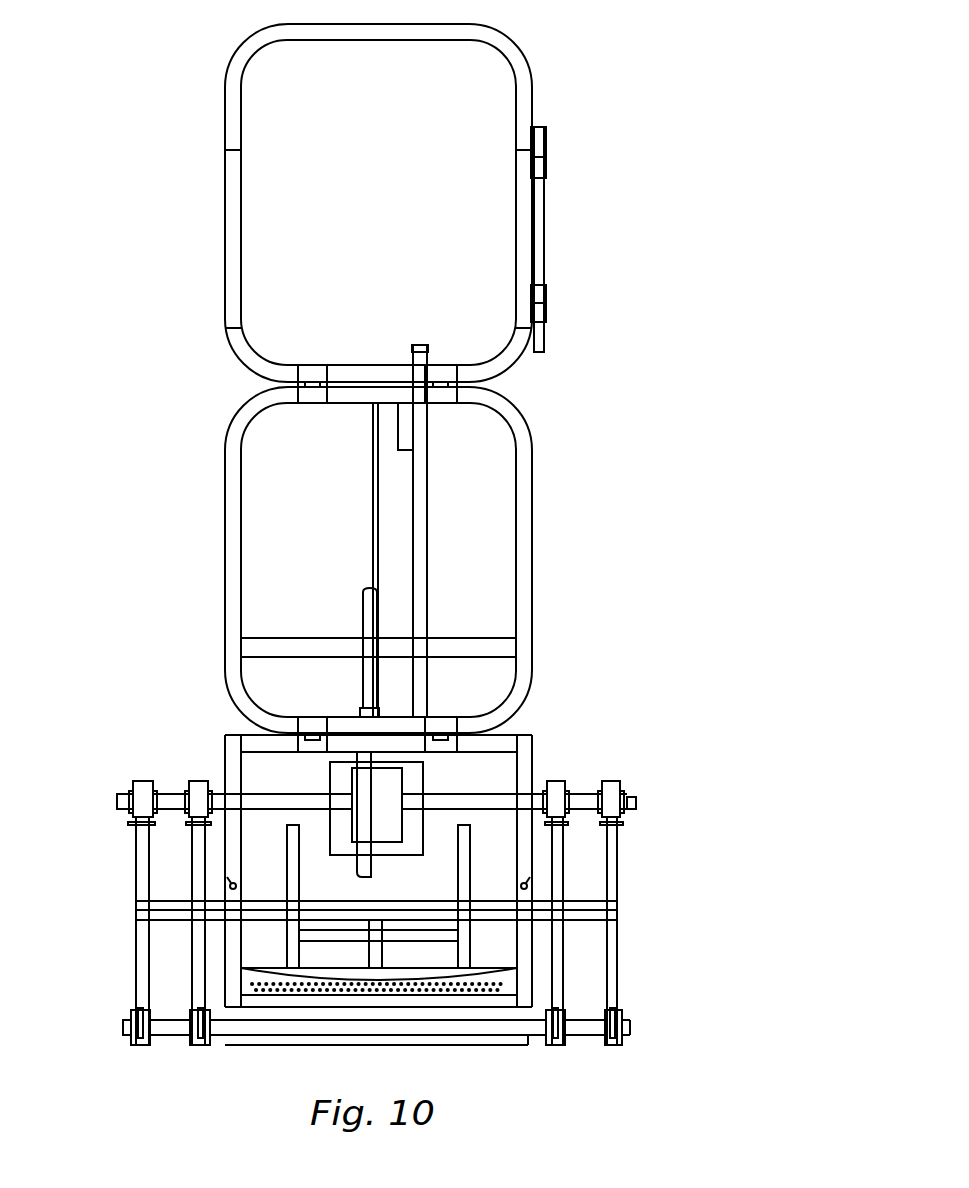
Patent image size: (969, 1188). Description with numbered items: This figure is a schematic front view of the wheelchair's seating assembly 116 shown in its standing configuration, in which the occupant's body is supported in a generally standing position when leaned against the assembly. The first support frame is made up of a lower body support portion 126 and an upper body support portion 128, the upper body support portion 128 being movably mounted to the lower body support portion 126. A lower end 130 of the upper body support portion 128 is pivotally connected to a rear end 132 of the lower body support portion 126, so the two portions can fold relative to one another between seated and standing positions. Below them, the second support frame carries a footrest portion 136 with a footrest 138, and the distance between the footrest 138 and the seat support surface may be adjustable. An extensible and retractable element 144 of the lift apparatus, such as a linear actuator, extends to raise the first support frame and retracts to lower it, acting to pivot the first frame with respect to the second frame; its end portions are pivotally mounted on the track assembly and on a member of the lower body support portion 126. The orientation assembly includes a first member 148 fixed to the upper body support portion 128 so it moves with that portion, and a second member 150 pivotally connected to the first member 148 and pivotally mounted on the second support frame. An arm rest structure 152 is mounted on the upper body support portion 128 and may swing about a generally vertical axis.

The seating assembly 116 is at (587, 323).
The lower body support portion 126 is at (525, 498).
The upper body support portion 128 is at (523, 100).
The lower end 130 is at (505, 362).
The rear end 132 is at (512, 416).
The footrest portion 136 is at (523, 775).
The footrest 138 is at (275, 973).
The extensible and retractable element 144 is at (372, 607).
The first member 148 is at (405, 423).
The second member 150 is at (420, 523).
The arm rest structure 152 is at (535, 232).